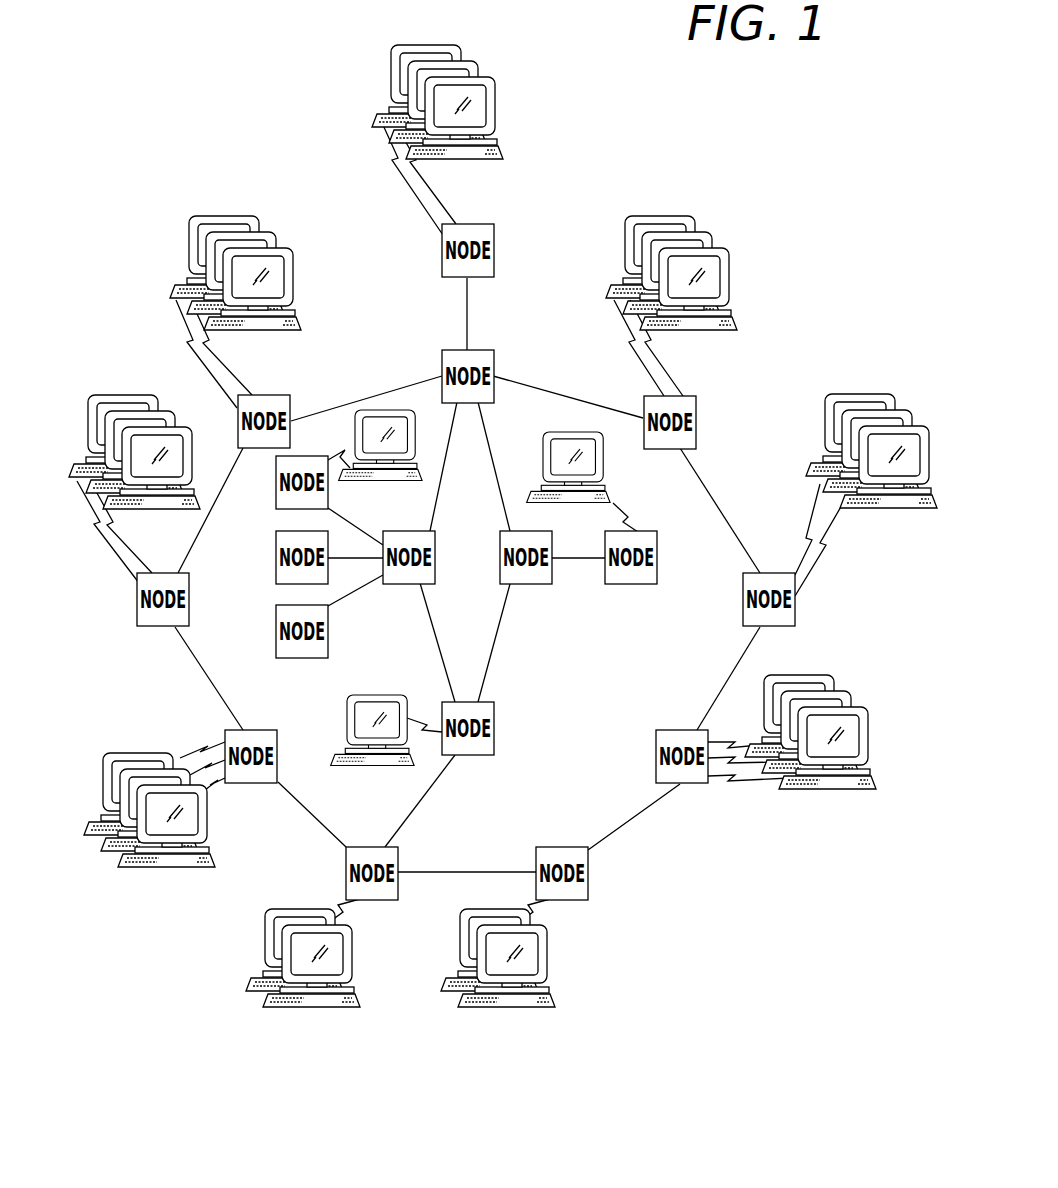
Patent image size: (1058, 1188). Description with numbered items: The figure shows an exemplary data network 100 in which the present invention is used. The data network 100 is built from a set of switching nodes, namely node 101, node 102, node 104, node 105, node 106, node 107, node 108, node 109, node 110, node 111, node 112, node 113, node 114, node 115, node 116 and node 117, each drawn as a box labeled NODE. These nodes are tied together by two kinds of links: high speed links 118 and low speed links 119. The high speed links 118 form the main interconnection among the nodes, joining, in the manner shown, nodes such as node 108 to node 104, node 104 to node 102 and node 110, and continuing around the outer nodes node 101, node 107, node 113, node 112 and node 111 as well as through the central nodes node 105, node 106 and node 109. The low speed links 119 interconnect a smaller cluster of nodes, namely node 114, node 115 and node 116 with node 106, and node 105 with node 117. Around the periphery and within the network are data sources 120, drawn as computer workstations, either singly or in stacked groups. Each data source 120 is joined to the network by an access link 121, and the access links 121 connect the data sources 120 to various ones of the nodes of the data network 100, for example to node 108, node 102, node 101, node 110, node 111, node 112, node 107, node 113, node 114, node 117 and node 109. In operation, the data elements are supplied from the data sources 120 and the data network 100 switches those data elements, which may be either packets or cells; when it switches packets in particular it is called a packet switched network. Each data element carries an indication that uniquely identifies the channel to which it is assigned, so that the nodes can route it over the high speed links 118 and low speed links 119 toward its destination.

The data network 100 is at (252, 30).
The node 101 is at (142, 628).
The node 102 is at (293, 400).
The node 104 is at (495, 354).
The node 105 is at (532, 577).
The node 106 is at (398, 580).
The node 107 is at (346, 872).
The node 108 is at (442, 262).
The node 109 is at (494, 712).
The node 110 is at (697, 436).
The node 111 is at (742, 616).
The node 112 is at (656, 775).
The node 113 is at (552, 850).
The node 114 is at (277, 478).
The node 115 is at (280, 568).
The node 116 is at (280, 640).
The node 117 is at (618, 578).
The high speed links 118 is at (469, 310).
The low speed links 119 is at (354, 553).
The data sources 120 is at (497, 106).
The access links 121 is at (448, 188).